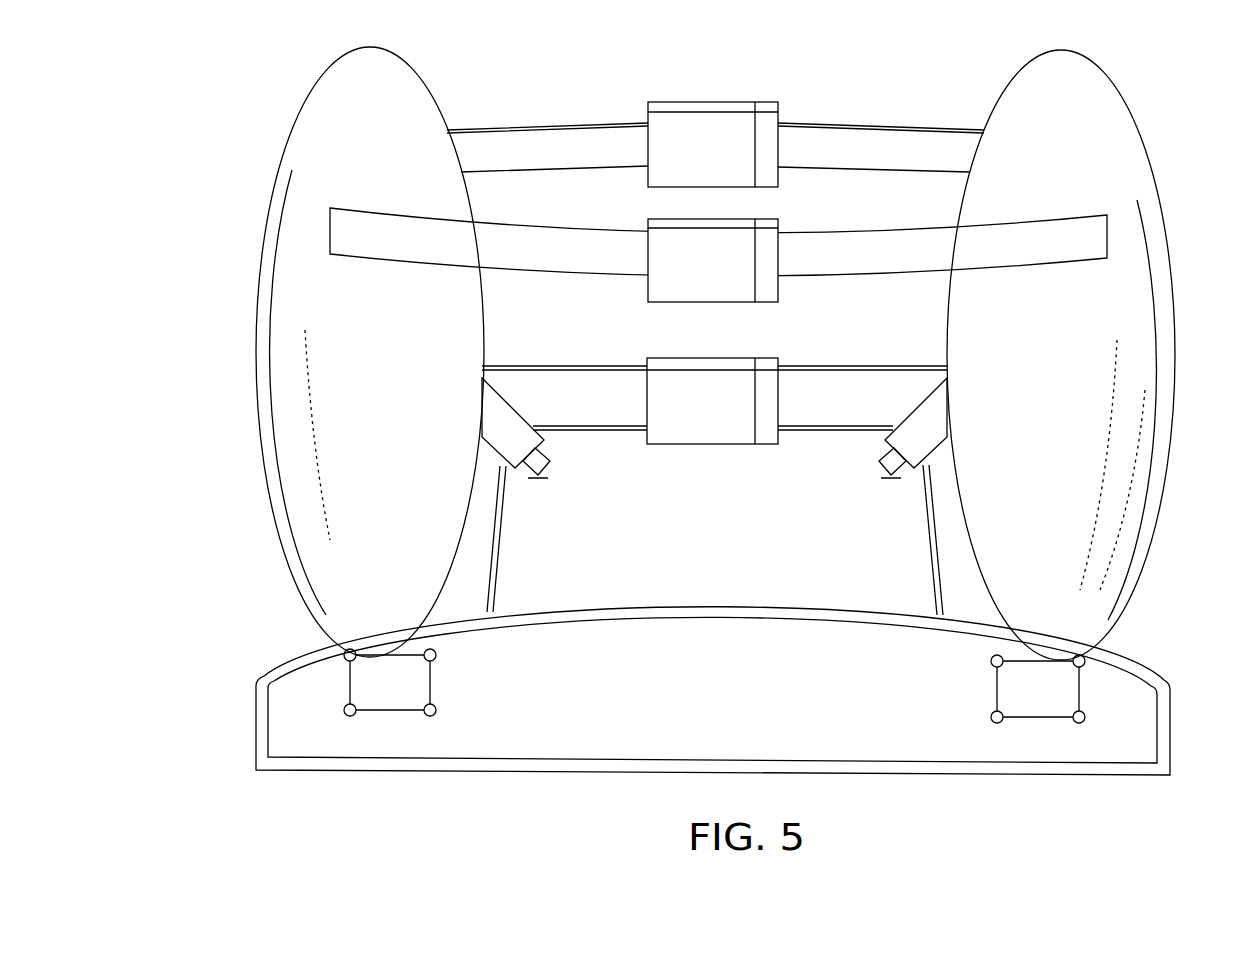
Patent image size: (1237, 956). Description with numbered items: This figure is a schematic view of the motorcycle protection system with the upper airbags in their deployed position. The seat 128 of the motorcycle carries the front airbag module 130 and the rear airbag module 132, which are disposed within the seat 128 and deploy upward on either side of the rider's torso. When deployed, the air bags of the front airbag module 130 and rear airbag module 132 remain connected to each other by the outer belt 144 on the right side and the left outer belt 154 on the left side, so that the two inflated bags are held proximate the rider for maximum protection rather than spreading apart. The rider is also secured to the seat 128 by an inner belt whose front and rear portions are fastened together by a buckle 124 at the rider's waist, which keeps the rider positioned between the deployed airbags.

The buckle 124 is at (715, 446).
The seat 128 is at (697, 643).
The front airbag module 130 is at (270, 292).
The rear airbag module 132 is at (1138, 292).
The outer belt 144 is at (846, 262).
The left outer belt 154 is at (820, 112).